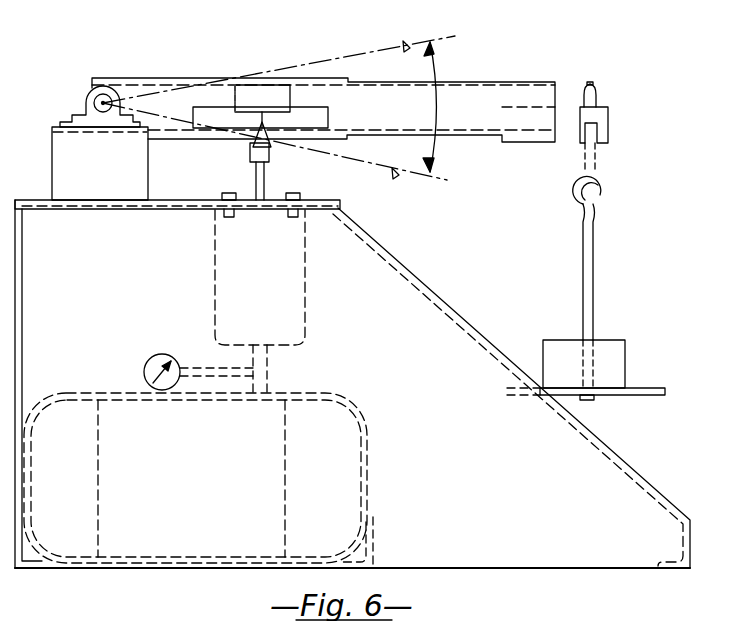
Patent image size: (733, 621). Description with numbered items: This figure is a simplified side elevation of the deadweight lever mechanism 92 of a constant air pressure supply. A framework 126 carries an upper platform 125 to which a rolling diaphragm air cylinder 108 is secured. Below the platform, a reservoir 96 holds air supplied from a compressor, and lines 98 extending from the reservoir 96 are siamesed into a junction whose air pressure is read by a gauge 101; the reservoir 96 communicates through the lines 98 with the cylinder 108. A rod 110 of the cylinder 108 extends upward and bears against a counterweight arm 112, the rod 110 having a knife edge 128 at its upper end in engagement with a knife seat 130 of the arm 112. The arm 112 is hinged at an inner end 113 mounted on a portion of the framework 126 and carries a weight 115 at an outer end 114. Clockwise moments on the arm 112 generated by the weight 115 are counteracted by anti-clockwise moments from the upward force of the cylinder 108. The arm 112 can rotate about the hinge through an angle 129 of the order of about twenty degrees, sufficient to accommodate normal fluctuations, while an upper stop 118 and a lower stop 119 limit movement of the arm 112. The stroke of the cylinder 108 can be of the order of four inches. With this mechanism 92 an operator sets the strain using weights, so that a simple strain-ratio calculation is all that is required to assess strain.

The deadweight lever mechanism 92 is at (404, 242).
The reservoir 96 is at (196, 484).
The lines 98 is at (268, 379).
The gauge 101 is at (143, 372).
The rolling diaphragm air cylinder 108 is at (240, 287).
The rod 110 is at (254, 181).
The counterweight arm 112 is at (165, 60).
The inner end (hinge) 113 is at (86, 101).
The outer end 114 is at (612, 108).
The weight 115 is at (622, 364).
The upper stop 118 is at (406, 46).
The lower stop 119 is at (393, 171).
The upper platform 125 is at (127, 200).
The framework 126 is at (522, 516).
The sensor 128 is at (250, 150).
The angle 129 is at (440, 98).
The knife seat 130 is at (263, 107).